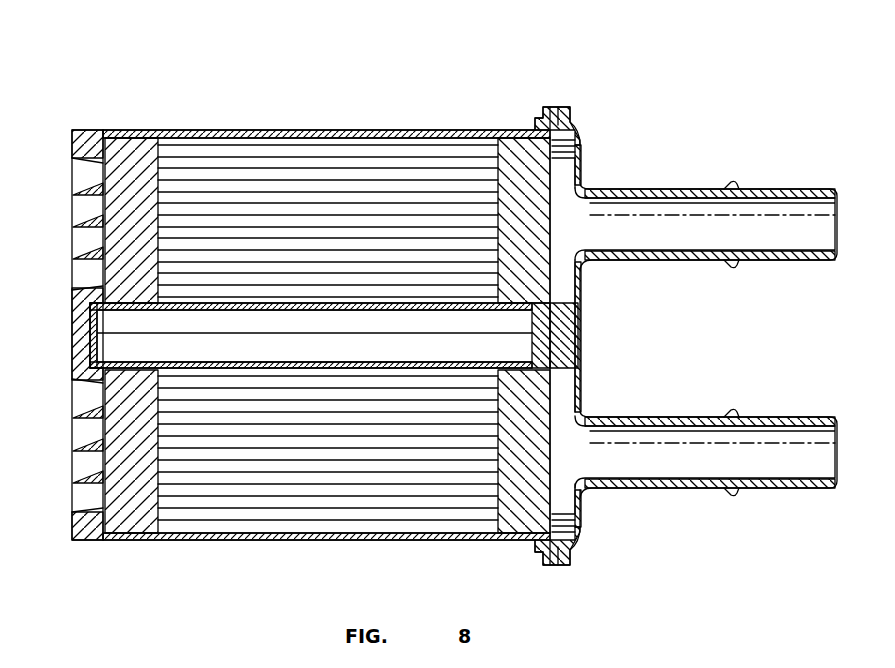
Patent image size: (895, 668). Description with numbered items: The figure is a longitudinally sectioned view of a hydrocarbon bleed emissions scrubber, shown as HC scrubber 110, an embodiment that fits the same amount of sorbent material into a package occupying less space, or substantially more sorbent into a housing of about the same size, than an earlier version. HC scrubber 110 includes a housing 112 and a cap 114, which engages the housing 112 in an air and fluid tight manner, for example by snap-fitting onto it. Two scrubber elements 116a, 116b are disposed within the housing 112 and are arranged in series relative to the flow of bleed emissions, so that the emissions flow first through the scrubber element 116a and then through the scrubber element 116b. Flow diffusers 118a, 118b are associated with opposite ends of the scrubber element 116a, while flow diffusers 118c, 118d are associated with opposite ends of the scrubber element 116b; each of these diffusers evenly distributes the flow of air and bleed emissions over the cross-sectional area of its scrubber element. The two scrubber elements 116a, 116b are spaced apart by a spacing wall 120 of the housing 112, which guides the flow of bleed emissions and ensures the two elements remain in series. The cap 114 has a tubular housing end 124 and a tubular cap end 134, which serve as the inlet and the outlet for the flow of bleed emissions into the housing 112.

The HC scrubber 110 is at (452, 50).
The housing 112 is at (98, 130).
The cap 114 is at (580, 312).
The scrubber element 116a is at (322, 172).
The scrubber element 116b is at (297, 500).
The flow diffuser 118a is at (496, 172).
The flow diffuser 118b is at (160, 180).
The flow diffuser 118c is at (158, 492).
The flow diffuser 118d is at (497, 495).
The spacing wall 120 is at (85, 346).
The tubular housing end 124 is at (680, 488).
The tubular cap end 134 is at (685, 189).